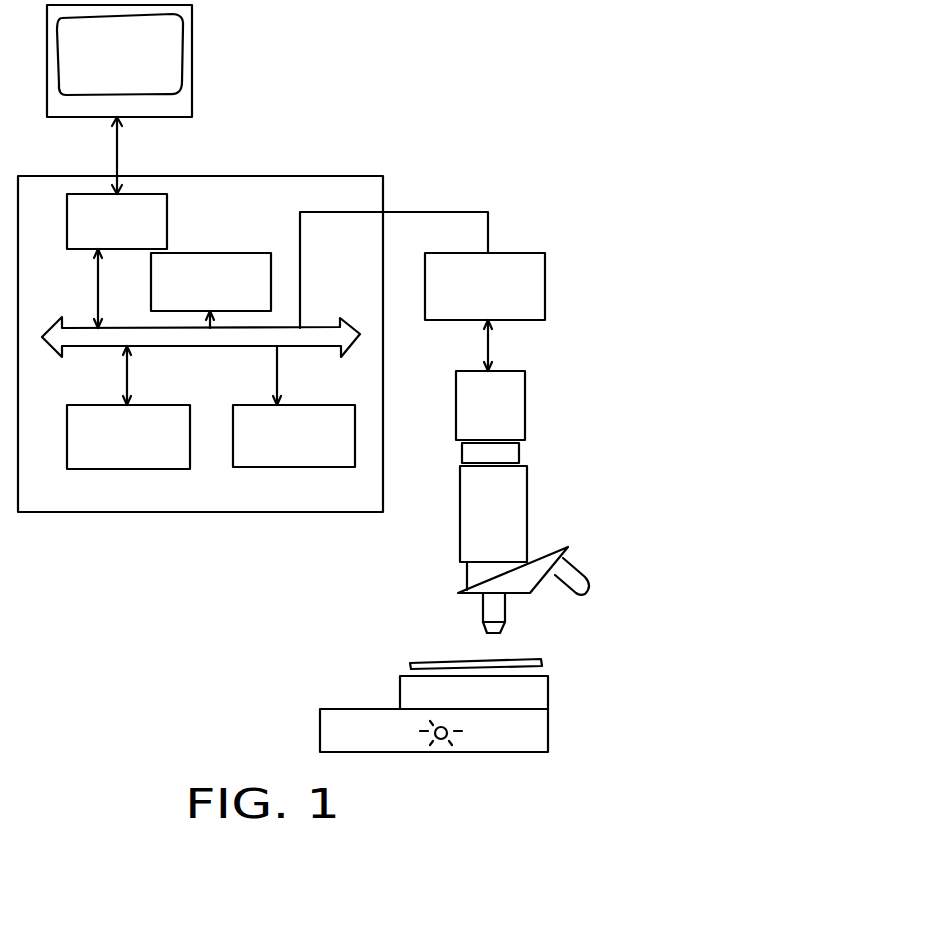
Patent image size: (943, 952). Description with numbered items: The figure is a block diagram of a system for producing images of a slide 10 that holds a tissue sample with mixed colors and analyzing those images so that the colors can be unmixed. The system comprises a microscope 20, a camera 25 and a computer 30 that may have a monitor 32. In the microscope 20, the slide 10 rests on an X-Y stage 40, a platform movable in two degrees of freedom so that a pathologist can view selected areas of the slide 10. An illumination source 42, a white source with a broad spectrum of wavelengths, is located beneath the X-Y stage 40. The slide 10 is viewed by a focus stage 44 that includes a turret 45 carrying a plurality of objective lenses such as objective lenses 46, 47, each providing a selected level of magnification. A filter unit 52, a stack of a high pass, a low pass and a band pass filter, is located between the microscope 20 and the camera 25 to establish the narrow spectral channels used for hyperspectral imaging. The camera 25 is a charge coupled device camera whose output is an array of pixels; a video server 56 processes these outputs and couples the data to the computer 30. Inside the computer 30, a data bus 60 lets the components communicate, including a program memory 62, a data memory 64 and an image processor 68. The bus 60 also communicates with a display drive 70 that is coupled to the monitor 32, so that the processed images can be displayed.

The slide 10 is at (541, 660).
The microscope 20 is at (559, 504).
The camera 25 is at (528, 408).
The computer 30 is at (198, 322).
The monitor 32 is at (180, 100).
The X-Y stage 40 is at (548, 688).
The illumination source 42 is at (548, 736).
The focus stage 44 is at (530, 507).
The turret 45 is at (527, 573).
The objective lens 46 is at (483, 607).
The objective lens 47 is at (565, 563).
The filter unit 52 is at (520, 450).
The video server 56 is at (541, 277).
The data bus 60 is at (145, 327).
The program memory 62 is at (146, 405).
The data memory 64 is at (302, 410).
The image processor 68 is at (233, 253).
The display drive 70 is at (167, 213).